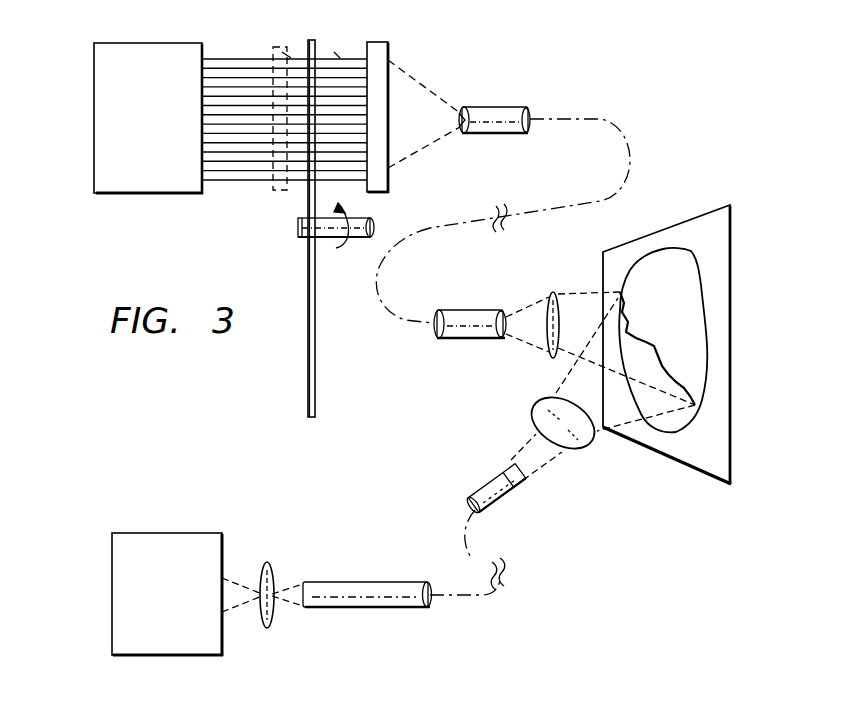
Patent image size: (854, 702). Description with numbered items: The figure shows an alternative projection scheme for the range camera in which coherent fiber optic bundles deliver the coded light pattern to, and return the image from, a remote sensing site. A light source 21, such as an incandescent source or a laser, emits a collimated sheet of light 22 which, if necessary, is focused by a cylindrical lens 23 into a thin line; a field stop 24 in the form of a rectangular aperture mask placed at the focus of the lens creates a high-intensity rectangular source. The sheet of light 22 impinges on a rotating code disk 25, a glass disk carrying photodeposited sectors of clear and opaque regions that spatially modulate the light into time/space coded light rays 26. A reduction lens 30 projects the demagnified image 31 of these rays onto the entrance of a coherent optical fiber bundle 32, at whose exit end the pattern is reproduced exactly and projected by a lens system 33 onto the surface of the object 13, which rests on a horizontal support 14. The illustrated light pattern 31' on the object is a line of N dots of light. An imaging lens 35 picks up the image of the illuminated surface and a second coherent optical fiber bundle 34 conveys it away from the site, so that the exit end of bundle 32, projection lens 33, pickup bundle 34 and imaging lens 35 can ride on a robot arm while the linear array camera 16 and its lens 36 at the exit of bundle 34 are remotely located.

The object 13 is at (678, 249).
The horizontal support 14 is at (692, 455).
The linear array camera 16 is at (186, 533).
The light source 21 is at (94, 91).
The sheet of light 22 is at (246, 57).
The cylindrical lens 23 is at (274, 189).
The field stop 24 is at (291, 58).
The rotating code disk 25 is at (308, 362).
The coded light rays 26 is at (340, 59).
The reduction lens 30 is at (378, 42).
The demagnified image 31 is at (424, 114).
The light pattern 31' is at (632, 348).
The coherent optical fiber bundle 32 is at (500, 106).
The projection lens system 33 is at (557, 292).
The image pickup coherent fiber bundle 34 is at (386, 582).
The imaging lens 35 is at (537, 414).
The lens 36 is at (274, 582).